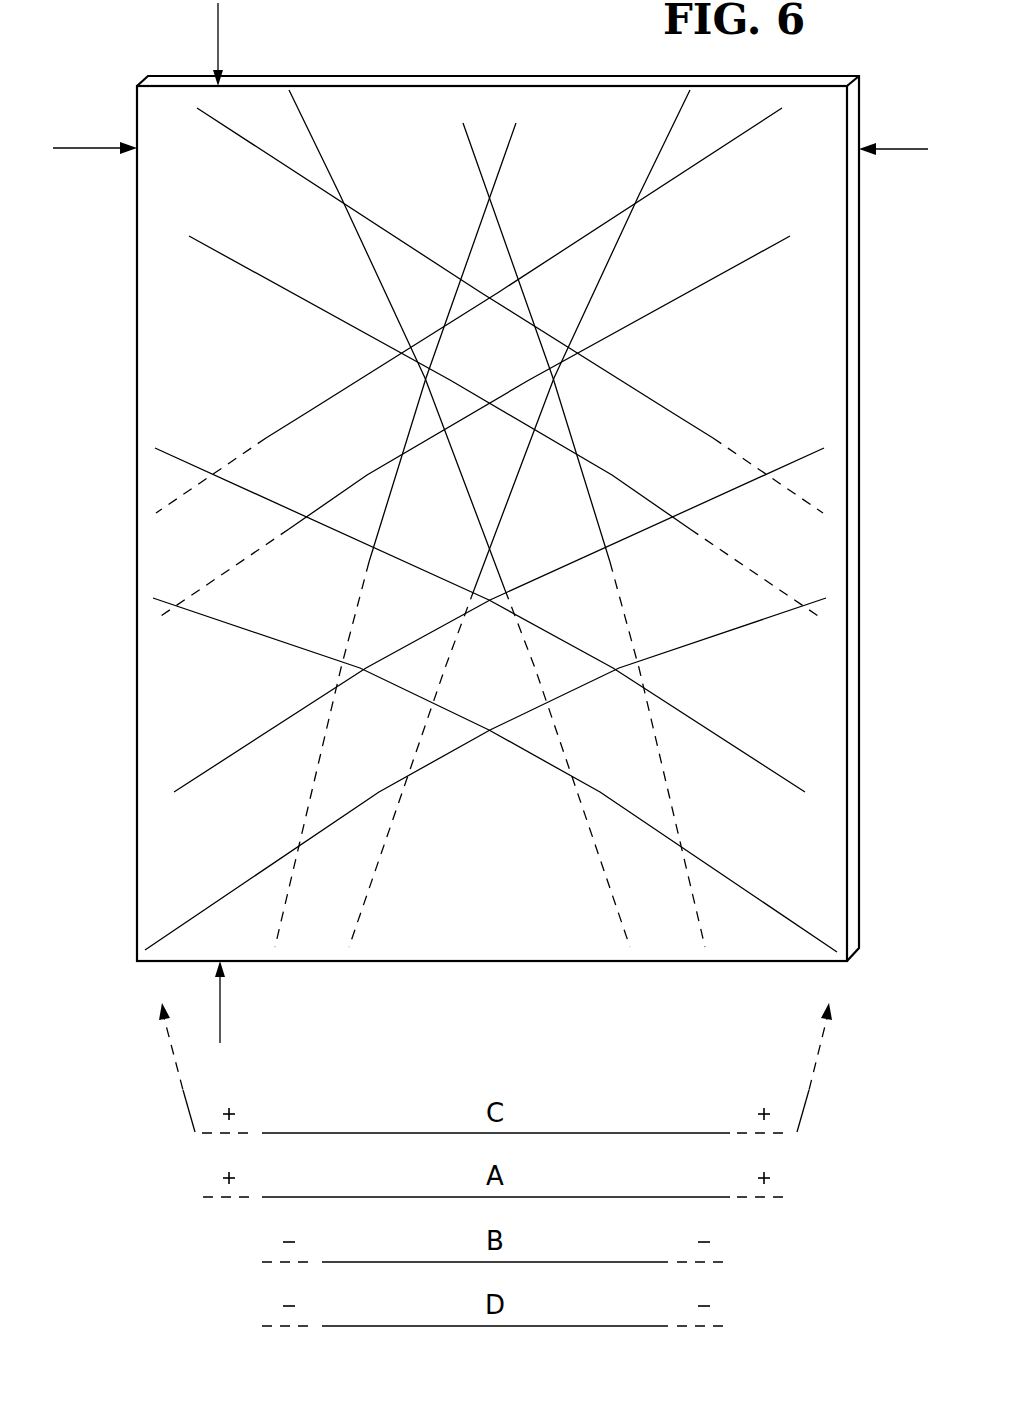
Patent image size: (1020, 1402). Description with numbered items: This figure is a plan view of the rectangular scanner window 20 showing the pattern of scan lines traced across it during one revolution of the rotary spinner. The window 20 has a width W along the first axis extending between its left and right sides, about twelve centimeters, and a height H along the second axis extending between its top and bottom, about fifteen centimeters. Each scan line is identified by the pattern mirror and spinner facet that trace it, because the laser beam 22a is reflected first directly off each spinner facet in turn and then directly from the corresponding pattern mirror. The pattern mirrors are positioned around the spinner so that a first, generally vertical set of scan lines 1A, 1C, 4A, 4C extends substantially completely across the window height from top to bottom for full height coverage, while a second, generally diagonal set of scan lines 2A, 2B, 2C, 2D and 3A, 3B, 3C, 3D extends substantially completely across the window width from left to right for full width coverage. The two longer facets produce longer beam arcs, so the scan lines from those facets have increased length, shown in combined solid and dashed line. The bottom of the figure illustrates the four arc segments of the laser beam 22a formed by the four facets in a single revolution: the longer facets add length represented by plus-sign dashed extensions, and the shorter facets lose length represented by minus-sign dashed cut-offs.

The window 20 is at (427, 84).
The window height H is at (218, 32).
The window width W is at (92, 148).
The first scan line 1A is at (312, 138).
The scan line 1C is at (475, 158).
The scan line 4A is at (668, 138).
The scan line 4C is at (504, 158).
The scan line 2A is at (612, 475).
The scan line 2B is at (782, 776).
The scan line 2C is at (668, 408).
The scan line 2D is at (805, 928).
The scan line 3A is at (367, 475).
The scan line 3B is at (200, 776).
The scan line 3C is at (308, 408).
The scan line 3D is at (213, 903).
The laser beam 22a is at (607, 1132).